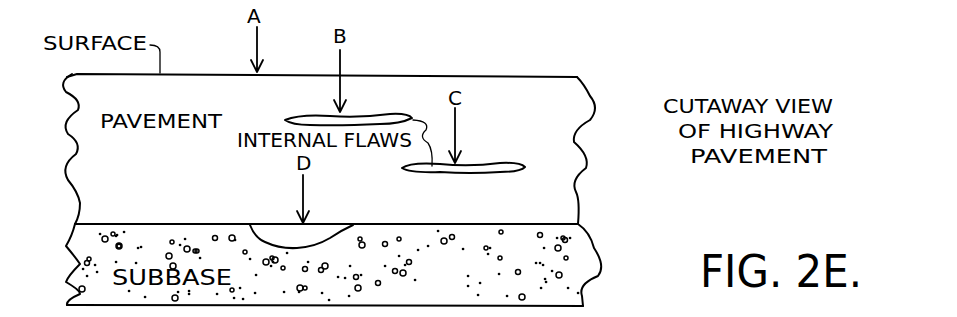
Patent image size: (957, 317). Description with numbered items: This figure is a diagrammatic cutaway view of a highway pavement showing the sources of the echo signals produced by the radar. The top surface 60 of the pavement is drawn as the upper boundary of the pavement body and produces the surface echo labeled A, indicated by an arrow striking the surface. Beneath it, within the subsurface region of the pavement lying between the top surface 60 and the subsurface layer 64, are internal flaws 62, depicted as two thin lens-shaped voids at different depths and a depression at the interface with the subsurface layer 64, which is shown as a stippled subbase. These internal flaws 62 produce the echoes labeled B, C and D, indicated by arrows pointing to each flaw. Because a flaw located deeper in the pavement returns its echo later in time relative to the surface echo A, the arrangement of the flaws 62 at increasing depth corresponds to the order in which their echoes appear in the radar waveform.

The top surface 60 is at (200, 73).
The internal flaws 62 is at (315, 114).
The subsurface layer 64 is at (458, 278).